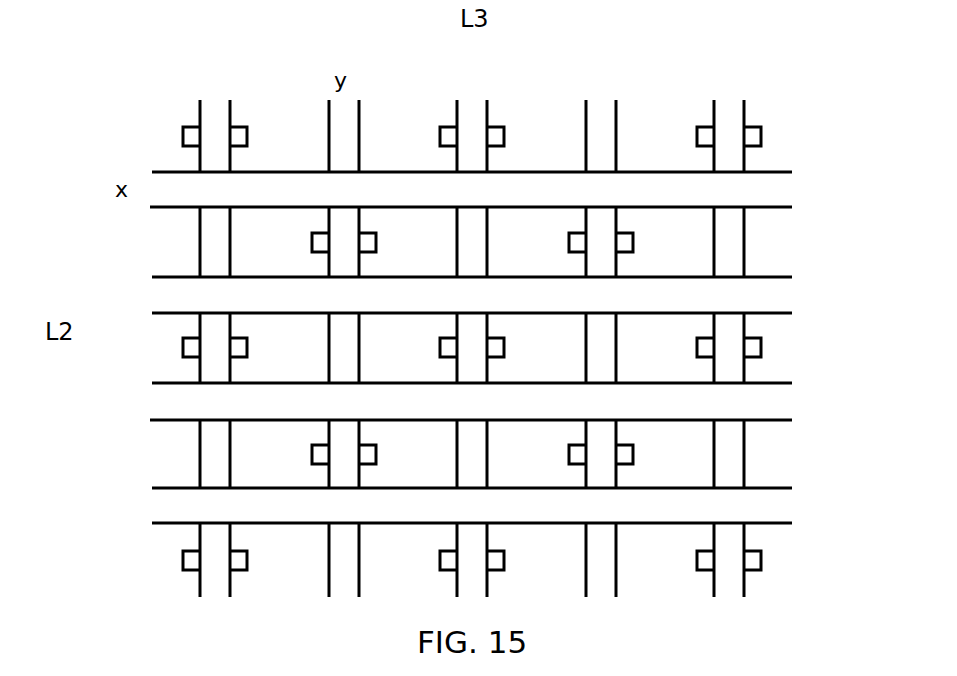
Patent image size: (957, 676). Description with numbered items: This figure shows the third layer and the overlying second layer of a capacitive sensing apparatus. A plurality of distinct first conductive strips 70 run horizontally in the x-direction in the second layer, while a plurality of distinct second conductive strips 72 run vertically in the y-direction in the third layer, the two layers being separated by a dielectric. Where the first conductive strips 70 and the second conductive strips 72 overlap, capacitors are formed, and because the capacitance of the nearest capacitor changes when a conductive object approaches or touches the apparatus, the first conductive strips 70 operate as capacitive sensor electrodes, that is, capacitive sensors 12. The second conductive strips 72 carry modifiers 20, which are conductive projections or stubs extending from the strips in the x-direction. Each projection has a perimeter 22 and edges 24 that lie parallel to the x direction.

The capacitive sensor 12 is at (152, 207).
The modifier 20 is at (183, 133).
The perimeter 22 is at (313, 236).
The edge 24 is at (313, 252).
The first conductive strip 70 is at (793, 190).
The second conductive strip 72 is at (215, 118).